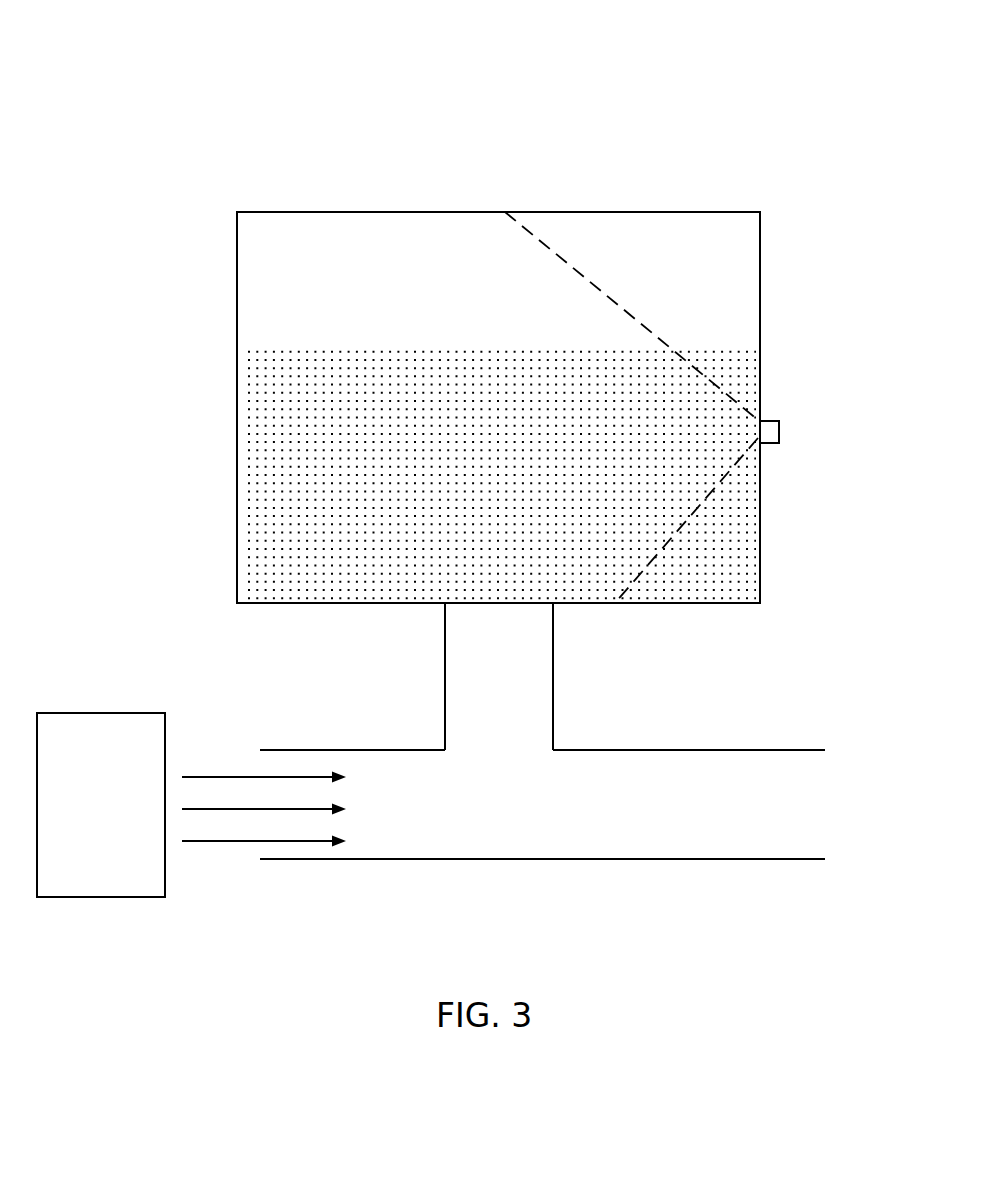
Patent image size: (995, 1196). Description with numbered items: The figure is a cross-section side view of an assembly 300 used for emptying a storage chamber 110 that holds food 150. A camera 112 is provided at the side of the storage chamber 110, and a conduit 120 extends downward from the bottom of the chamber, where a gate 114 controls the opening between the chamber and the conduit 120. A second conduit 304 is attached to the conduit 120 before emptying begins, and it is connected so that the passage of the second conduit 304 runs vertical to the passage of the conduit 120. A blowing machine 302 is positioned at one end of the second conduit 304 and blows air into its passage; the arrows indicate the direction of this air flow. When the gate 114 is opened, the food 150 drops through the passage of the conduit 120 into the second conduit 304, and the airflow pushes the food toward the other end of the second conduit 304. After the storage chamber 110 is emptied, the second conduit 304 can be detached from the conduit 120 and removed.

The assembly 300 is at (79, 50).
The storage chamber 110 is at (321, 268).
The food 150 is at (521, 488).
The camera 112 is at (780, 420).
The gate 114 is at (493, 603).
The conduit 120 is at (525, 705).
The second conduit 304 is at (670, 760).
The blowing machine 302 is at (112, 742).